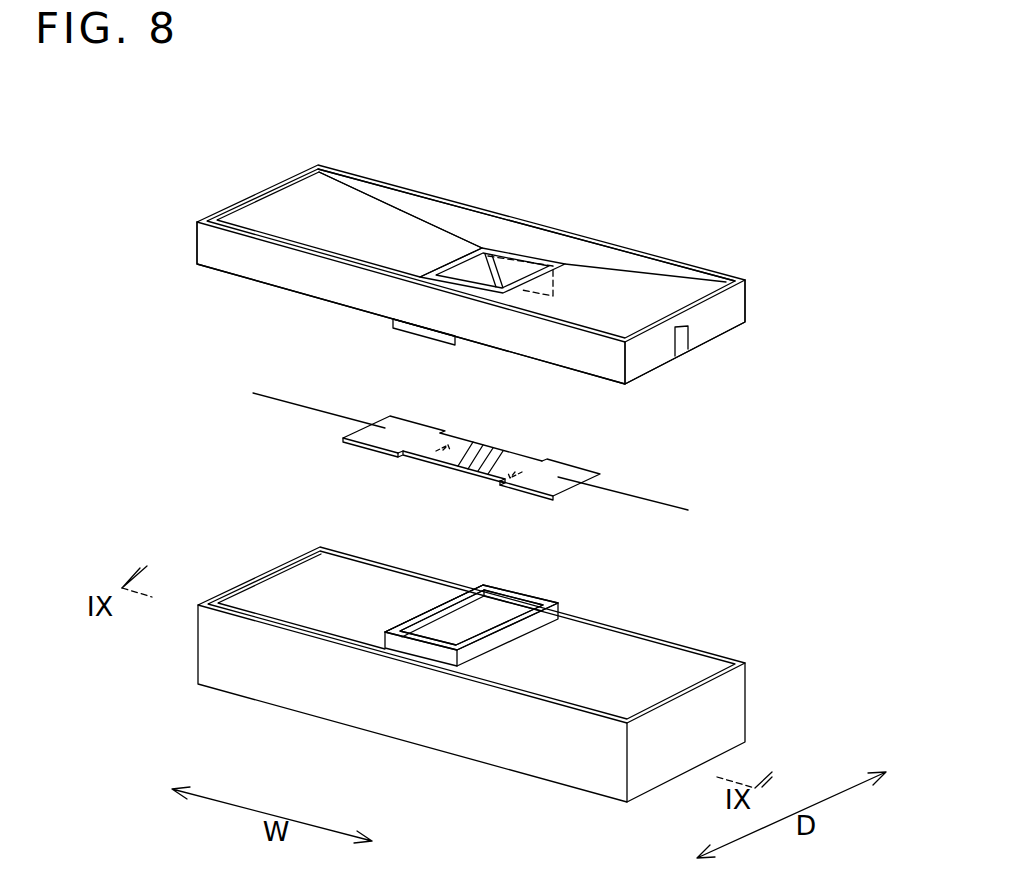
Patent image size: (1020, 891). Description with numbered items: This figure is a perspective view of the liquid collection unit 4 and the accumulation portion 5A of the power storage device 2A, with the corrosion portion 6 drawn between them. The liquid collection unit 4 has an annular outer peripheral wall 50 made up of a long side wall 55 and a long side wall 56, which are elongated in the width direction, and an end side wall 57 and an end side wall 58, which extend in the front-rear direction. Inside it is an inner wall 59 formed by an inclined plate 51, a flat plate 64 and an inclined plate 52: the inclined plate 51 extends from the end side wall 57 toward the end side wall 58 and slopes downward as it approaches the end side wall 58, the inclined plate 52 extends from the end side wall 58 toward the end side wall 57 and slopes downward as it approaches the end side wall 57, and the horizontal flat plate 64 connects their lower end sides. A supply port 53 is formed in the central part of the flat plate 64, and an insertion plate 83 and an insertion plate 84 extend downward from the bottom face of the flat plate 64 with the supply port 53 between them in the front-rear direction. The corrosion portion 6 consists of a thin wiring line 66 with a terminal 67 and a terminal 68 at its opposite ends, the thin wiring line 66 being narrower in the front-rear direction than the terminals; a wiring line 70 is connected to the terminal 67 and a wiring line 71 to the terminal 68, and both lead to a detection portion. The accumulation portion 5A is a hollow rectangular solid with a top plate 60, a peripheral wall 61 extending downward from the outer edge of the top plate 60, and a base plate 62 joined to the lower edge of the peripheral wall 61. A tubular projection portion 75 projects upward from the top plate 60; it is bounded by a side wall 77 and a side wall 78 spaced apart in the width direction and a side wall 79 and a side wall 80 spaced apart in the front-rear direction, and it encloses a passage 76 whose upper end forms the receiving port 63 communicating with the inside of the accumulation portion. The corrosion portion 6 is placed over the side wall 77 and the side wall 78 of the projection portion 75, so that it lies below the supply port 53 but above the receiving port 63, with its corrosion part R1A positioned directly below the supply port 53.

The power storage device 2A is at (263, 85).
The liquid collection unit 4 is at (727, 150).
The outer peripheral wall 50 is at (703, 268).
The inclined plate 51 is at (653, 285).
The inclined plate 52 is at (341, 197).
The supply port 53 is at (484, 272).
The long side wall 55 is at (312, 282).
The long side wall 56 is at (619, 244).
The end side wall 57 is at (727, 317).
The end side wall 58 is at (266, 188).
The inner wall 59 is at (407, 222).
The flat plate 64 is at (527, 260).
The insertion plate 84 is at (555, 250).
The insertion plate 83 is at (437, 339).
The corrosion portion 6 is at (613, 423).
The wiring line 71 is at (256, 391).
The wiring line 70 is at (676, 503).
The terminal 68 is at (408, 428).
The thin wiring line 66 is at (510, 458).
The terminal 67 is at (562, 470).
The corrosion part R1A is at (467, 444).
The accumulation portion 5A is at (183, 518).
The top plate 60 is at (657, 655).
The peripheral wall 61 is at (718, 713).
The base plate 62 is at (512, 770).
The receiving port 63 is at (494, 620).
The projection portion 75 is at (555, 572).
The passage 76 is at (428, 611).
The side wall 77 is at (523, 632).
The side wall 78 is at (452, 598).
The side wall 79 is at (415, 648).
The side wall 80 is at (518, 598).